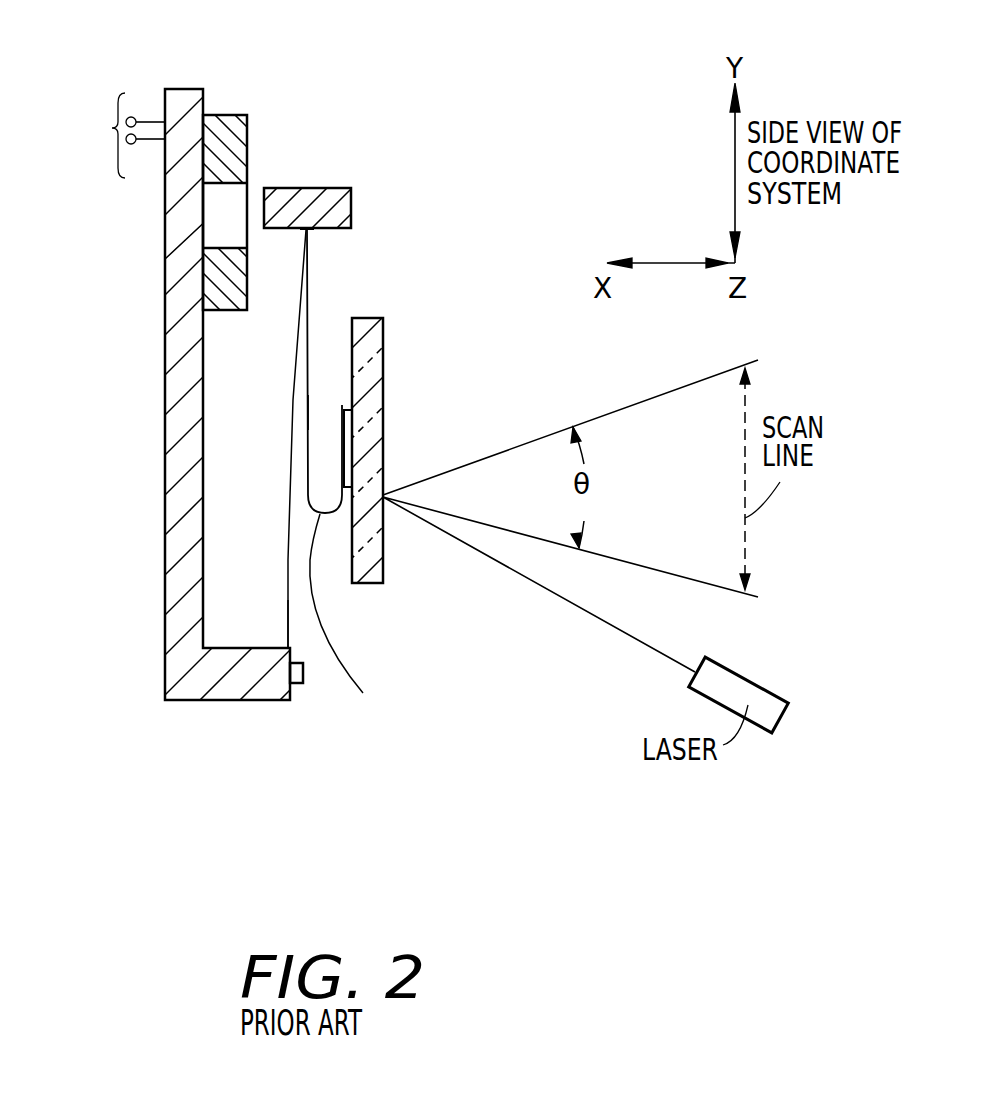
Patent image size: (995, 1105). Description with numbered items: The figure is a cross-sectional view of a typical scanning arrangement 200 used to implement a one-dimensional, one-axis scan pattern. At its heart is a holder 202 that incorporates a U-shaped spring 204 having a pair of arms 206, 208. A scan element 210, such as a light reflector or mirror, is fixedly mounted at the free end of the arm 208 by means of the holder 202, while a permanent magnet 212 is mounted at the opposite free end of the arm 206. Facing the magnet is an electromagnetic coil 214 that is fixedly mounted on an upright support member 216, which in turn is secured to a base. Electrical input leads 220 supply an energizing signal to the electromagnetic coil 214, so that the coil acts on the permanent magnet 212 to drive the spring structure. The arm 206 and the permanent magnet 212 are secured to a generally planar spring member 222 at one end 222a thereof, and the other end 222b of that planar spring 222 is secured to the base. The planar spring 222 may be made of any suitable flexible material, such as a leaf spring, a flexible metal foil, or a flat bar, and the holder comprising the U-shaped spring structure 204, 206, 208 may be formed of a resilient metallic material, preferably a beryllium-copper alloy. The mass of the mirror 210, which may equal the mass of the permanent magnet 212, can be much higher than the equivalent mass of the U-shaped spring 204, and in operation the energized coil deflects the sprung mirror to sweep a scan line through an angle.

The scanning arrangement 200 is at (132, 513).
The holder 202 is at (308, 316).
The U-shaped spring 204 is at (365, 617).
The arm 206 is at (308, 411).
The arm 208 is at (333, 514).
The scan element 210 is at (384, 393).
The permanent magnet 212 is at (352, 207).
The electromagnetic coil 214 is at (228, 113).
The upright support member 216 is at (165, 386).
The electrical input leads 220 is at (114, 135).
The planar spring member 222 is at (292, 443).
The end of planar spring member 222a is at (308, 187).
The other end of planar spring member 222b is at (288, 634).